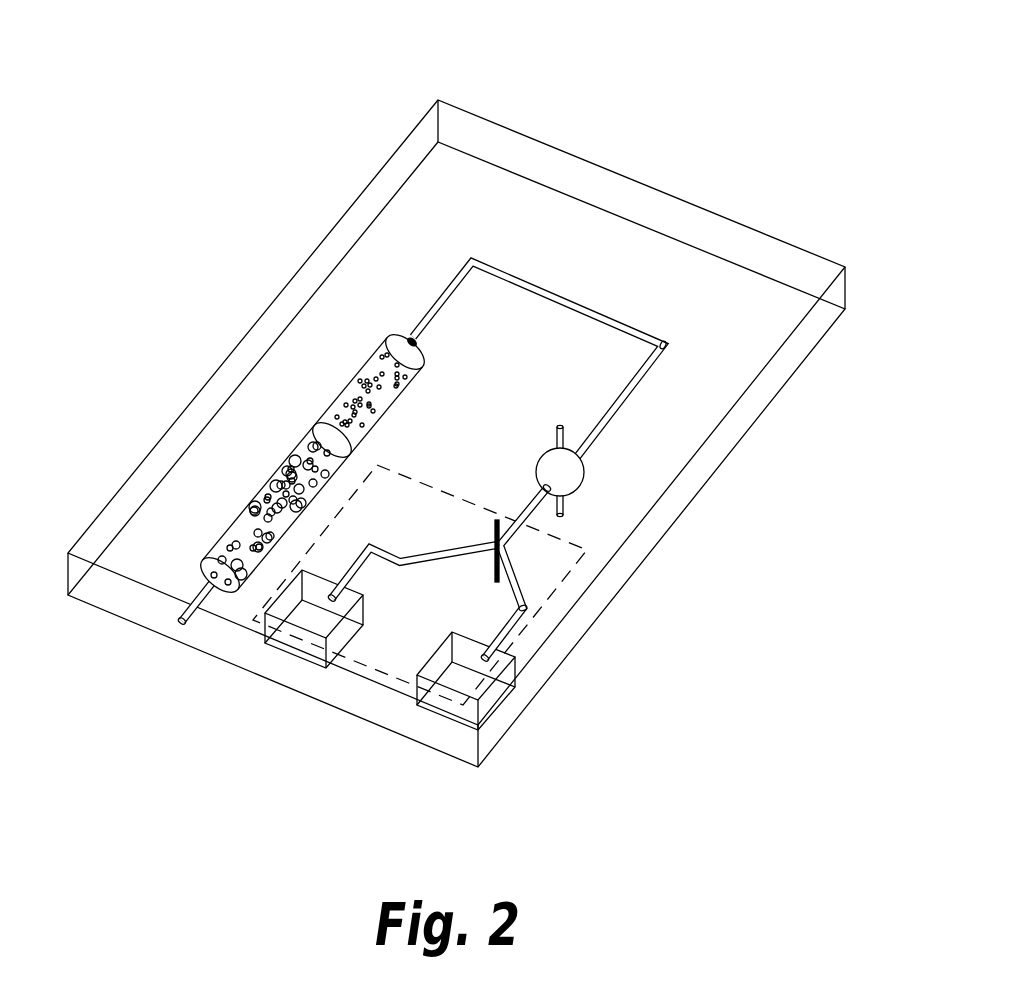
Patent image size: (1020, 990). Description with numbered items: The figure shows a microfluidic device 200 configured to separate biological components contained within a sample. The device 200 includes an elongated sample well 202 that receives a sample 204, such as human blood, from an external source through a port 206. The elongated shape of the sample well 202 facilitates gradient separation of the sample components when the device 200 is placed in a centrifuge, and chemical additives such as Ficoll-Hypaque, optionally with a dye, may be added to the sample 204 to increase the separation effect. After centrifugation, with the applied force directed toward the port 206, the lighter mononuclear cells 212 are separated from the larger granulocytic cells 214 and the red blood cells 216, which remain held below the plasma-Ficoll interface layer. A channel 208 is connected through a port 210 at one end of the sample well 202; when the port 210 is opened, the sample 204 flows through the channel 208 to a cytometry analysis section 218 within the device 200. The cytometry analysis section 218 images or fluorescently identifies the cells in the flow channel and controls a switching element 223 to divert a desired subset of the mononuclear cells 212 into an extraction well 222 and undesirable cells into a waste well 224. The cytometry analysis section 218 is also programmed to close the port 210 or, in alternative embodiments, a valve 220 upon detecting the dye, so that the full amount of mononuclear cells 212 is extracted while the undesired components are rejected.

The microfluidic device 200 is at (723, 74).
The sample well 202 is at (365, 366).
The sample 204 is at (298, 446).
The port 206 is at (183, 628).
The channel 208 is at (578, 303).
The port 210 is at (412, 342).
The mononuclear cells 212 is at (330, 405).
The granulocytic cells 214 is at (265, 487).
The red blood cells 216 is at (227, 531).
The cytometry analysis section 218 is at (585, 549).
The valve 220 is at (584, 480).
The extraction well 222 is at (503, 651).
The switching element 223 is at (532, 566).
The waste well 224 is at (287, 622).